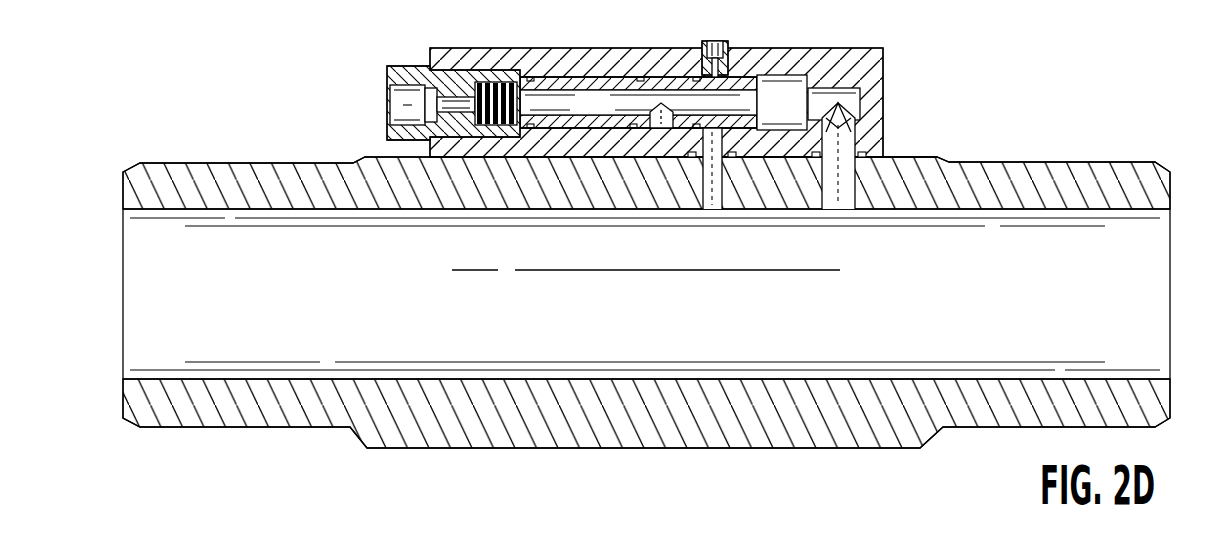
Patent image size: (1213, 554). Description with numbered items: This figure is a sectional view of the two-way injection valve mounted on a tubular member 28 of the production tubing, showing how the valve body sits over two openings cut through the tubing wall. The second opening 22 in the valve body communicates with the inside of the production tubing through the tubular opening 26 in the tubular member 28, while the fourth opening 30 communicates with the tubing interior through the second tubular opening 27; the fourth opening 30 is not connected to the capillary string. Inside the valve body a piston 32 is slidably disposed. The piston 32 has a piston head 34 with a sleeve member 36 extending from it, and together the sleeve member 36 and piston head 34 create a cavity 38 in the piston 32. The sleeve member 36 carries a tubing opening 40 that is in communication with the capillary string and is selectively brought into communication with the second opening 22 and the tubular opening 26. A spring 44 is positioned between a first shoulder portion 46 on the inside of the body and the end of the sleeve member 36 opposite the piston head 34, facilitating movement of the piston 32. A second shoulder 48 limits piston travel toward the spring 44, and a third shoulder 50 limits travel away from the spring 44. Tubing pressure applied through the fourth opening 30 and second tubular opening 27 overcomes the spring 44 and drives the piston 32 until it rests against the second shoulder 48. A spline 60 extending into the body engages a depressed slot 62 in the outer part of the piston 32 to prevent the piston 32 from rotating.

The second opening 22 is at (722, 163).
The tubular opening 26 is at (707, 190).
The second tubular opening 27 is at (847, 180).
The tubular member 28 is at (990, 158).
The fourth opening 30 is at (850, 133).
The piston 32 is at (555, 80).
The piston head 34 is at (758, 100).
The sleeve member 36 is at (567, 122).
The cavity 38 is at (603, 113).
The tubing opening 40 is at (662, 128).
The spring 44 is at (486, 122).
The first shoulder portion 46 is at (473, 70).
The second shoulder 48 is at (533, 130).
The third shoulder 50 is at (794, 80).
The spline 60 is at (722, 72).
The depressed slot 62 is at (673, 77).